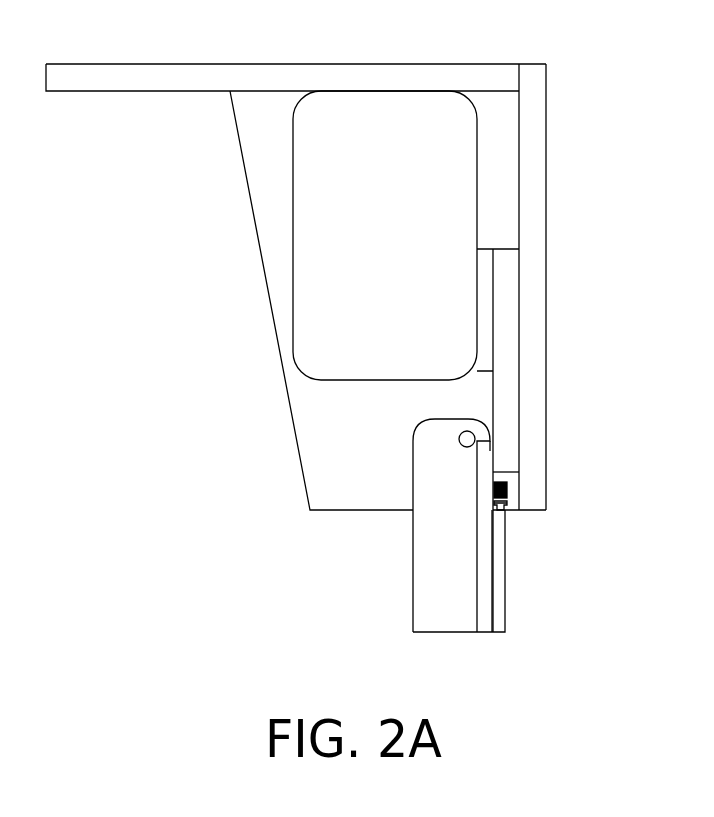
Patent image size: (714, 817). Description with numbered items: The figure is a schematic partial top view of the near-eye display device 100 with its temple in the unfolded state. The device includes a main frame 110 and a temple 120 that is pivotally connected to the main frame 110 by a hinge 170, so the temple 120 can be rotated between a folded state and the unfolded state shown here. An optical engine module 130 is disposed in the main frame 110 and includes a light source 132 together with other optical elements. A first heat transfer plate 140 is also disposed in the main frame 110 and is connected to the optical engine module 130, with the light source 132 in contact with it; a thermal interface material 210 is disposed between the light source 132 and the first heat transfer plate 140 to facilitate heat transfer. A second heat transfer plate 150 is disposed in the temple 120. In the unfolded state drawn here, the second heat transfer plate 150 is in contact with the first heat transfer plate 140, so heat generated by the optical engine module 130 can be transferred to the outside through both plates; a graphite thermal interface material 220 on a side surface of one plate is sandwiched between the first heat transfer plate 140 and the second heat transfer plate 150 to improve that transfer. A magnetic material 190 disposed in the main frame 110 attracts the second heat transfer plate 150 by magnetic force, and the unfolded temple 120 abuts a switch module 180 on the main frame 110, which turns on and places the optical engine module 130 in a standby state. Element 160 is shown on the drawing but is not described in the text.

The near-eye display device 100 is at (349, 352).
The main frame 110 is at (533, 170).
The temple 120 is at (457, 617).
The optical engine module 130 is at (440, 158).
The light source 132 is at (483, 253).
The first heat transfer plate 140 is at (508, 298).
The second heat transfer plate 150 is at (485, 558).
The top cover 160 is at (231, 77).
The hinge 170 is at (466, 440).
The switch module 180 is at (507, 507).
The magnetic material 190 is at (508, 489).
The thermal interface material 210 is at (494, 271).
The graphite thermal interface material 220 is at (493, 451).